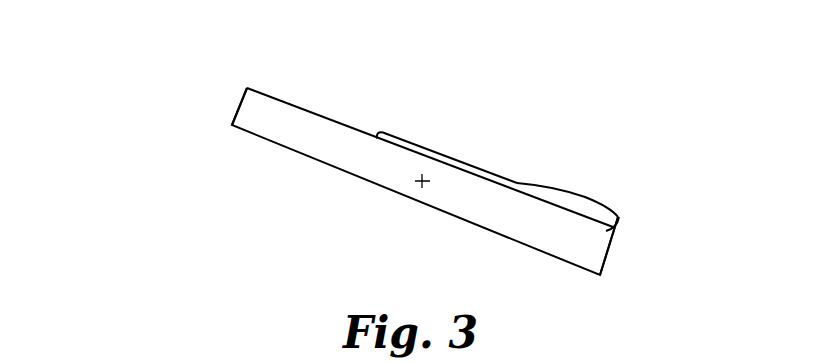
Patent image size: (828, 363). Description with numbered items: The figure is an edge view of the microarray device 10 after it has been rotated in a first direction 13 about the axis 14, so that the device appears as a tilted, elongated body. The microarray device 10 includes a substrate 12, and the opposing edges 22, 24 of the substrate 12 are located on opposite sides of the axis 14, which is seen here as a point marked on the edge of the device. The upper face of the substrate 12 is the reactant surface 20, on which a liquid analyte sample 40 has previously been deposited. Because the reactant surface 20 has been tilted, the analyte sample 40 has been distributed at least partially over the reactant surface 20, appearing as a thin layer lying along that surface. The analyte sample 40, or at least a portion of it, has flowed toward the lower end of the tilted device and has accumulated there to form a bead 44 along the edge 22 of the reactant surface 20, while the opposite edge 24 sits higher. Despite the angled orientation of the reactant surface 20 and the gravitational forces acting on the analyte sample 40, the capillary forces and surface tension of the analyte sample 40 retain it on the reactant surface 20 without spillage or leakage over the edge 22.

The microarray device 10 is at (272, 160).
The substrate 12 is at (580, 252).
The first direction 13 is at (367, 195).
The axis 14 is at (424, 176).
The reactant surface 20 is at (328, 118).
The edge 22 is at (620, 217).
The edge 24 is at (267, 90).
The analyte sample 40 is at (527, 182).
The bead 44 is at (582, 203).